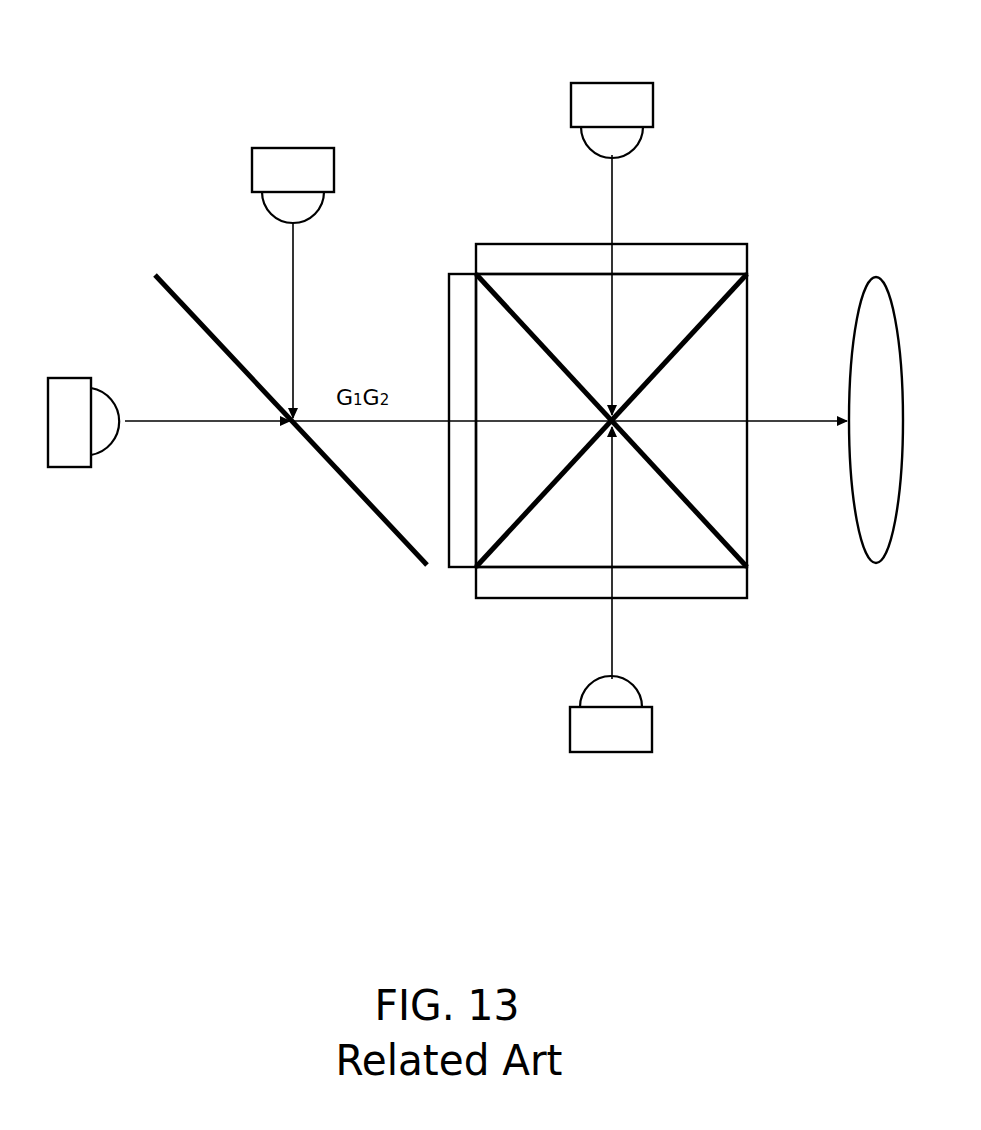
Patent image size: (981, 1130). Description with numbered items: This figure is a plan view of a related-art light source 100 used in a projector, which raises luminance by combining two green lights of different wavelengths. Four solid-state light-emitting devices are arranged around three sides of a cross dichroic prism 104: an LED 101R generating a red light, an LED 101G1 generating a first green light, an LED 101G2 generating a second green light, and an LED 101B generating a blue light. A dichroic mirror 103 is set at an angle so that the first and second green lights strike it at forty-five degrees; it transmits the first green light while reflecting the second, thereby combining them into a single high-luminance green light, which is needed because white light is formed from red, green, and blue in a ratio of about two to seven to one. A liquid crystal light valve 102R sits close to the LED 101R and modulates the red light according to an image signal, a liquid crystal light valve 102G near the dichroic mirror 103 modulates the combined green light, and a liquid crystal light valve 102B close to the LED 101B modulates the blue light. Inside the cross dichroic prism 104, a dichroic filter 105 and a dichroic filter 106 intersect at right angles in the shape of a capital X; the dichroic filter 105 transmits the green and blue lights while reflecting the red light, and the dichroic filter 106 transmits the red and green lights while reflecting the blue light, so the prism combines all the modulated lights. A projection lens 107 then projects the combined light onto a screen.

The light source 100 is at (822, 86).
The LED 101G1 is at (77, 377).
The LED 101G2 is at (293, 147).
The LED 101B is at (612, 82).
The LED 101R is at (612, 755).
The liquid crystal light valve 102G is at (449, 290).
The liquid crystal light valve 102B is at (737, 243).
The liquid crystal light valve 102R is at (515, 600).
The dichroic mirror 103 is at (202, 320).
The cross dichroic prism 104 is at (663, 287).
The dichroic filter 105 is at (731, 300).
The dichroic filter 106 is at (501, 297).
The projection lens 107 is at (876, 276).